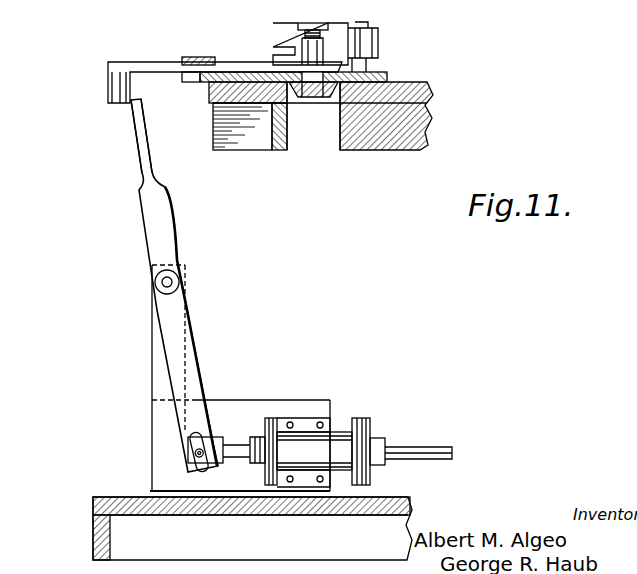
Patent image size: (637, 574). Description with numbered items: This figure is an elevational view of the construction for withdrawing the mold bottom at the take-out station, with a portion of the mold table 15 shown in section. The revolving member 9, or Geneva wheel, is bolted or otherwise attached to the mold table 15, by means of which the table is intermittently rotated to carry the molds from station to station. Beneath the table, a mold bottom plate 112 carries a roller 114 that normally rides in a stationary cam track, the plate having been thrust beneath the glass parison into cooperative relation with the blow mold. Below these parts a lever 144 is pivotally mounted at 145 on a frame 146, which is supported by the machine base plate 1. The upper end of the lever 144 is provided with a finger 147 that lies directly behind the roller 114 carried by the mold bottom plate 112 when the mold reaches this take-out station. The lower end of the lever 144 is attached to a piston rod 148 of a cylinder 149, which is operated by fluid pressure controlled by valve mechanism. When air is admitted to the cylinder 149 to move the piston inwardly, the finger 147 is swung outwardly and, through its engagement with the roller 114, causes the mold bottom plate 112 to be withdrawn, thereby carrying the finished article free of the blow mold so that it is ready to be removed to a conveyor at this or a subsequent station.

The machine base plate 1 is at (93, 500).
The revolving member 9 is at (413, 118).
The mold table 15 is at (422, 84).
The mold bottom plate 112 is at (223, 70).
The roller 114 is at (122, 78).
The lever 144 is at (152, 220).
The pivot 145 is at (167, 282).
The frame 146 is at (152, 355).
The finger 147 is at (140, 118).
The piston rod 148 is at (225, 447).
The cylinder 149 is at (318, 445).